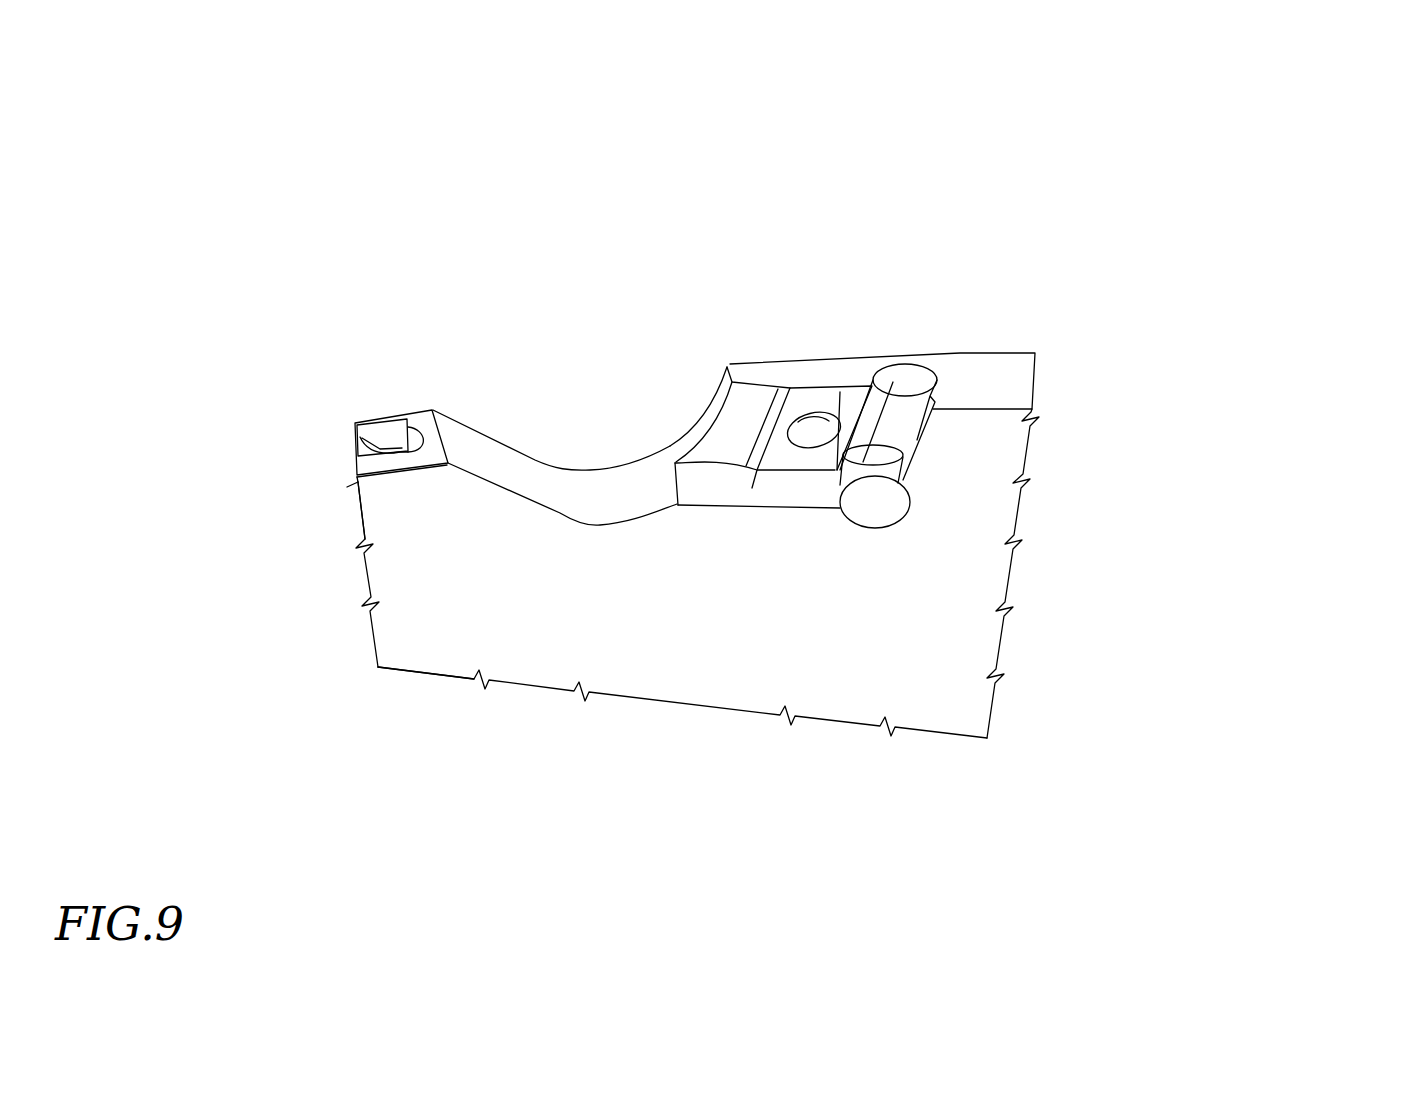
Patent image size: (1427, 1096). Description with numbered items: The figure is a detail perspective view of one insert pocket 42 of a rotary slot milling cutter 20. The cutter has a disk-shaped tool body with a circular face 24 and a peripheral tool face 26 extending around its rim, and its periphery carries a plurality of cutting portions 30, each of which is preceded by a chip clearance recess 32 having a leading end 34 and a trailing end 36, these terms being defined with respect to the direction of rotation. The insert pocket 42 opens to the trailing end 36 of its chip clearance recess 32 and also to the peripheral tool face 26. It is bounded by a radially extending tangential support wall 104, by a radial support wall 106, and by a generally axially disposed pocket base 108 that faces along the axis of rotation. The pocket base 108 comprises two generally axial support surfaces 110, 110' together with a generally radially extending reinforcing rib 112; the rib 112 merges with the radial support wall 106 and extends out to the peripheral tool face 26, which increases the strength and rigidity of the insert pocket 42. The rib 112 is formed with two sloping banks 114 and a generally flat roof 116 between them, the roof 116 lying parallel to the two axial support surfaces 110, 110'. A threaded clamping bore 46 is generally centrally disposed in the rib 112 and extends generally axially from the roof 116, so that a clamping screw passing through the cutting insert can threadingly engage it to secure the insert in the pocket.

The rotary slot milling cutter 20 is at (1308, 206).
The circular face 24 is at (453, 638).
The peripheral tool face 26 is at (997, 357).
The peripheral cutting portion 30 is at (416, 550).
The chip clearance recess 32 is at (674, 512).
The leading end 34 is at (482, 457).
The trailing end 36 is at (700, 485).
The insert pocket 42 is at (821, 508).
The threaded clamping bore 46 is at (868, 372).
The tangential support wall 104 is at (917, 484).
The radial support wall 106 is at (700, 470).
The pocket base 108 is at (735, 415).
The axial support surface 110 is at (784, 365).
The axial support surface 110' is at (958, 299).
The reinforcing rib 112 is at (797, 480).
The sloping bank 114 is at (780, 390).
The roof 116 is at (846, 392).